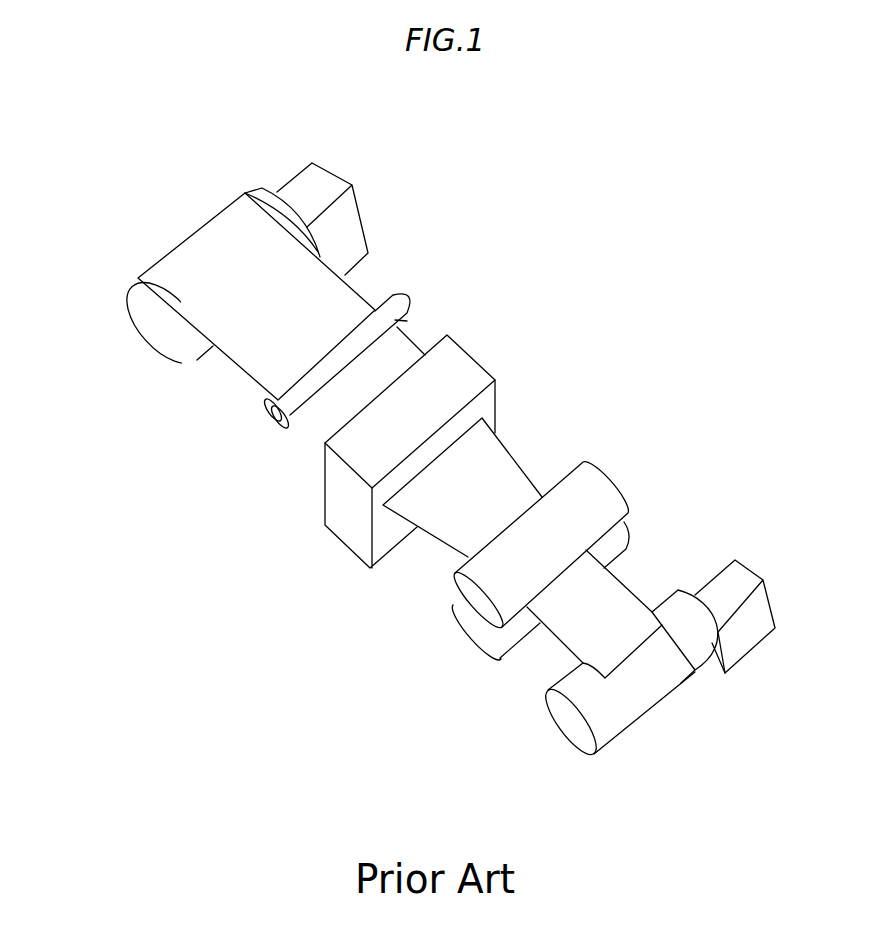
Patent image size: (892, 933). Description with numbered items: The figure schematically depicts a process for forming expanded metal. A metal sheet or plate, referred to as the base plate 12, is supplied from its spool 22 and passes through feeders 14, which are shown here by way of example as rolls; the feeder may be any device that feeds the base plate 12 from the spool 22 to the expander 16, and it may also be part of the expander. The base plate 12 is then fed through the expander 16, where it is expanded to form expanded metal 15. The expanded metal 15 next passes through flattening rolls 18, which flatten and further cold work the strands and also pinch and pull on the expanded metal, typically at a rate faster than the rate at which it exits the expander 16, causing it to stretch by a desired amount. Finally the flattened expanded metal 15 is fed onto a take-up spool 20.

The base plate 12 is at (347, 294).
The feeders 14 is at (274, 403).
The expanded metal 15 is at (608, 595).
The expander 16 is at (350, 520).
The flattening rolls 18 is at (610, 498).
The take-up spool 20 is at (557, 707).
The spool 22 is at (168, 345).